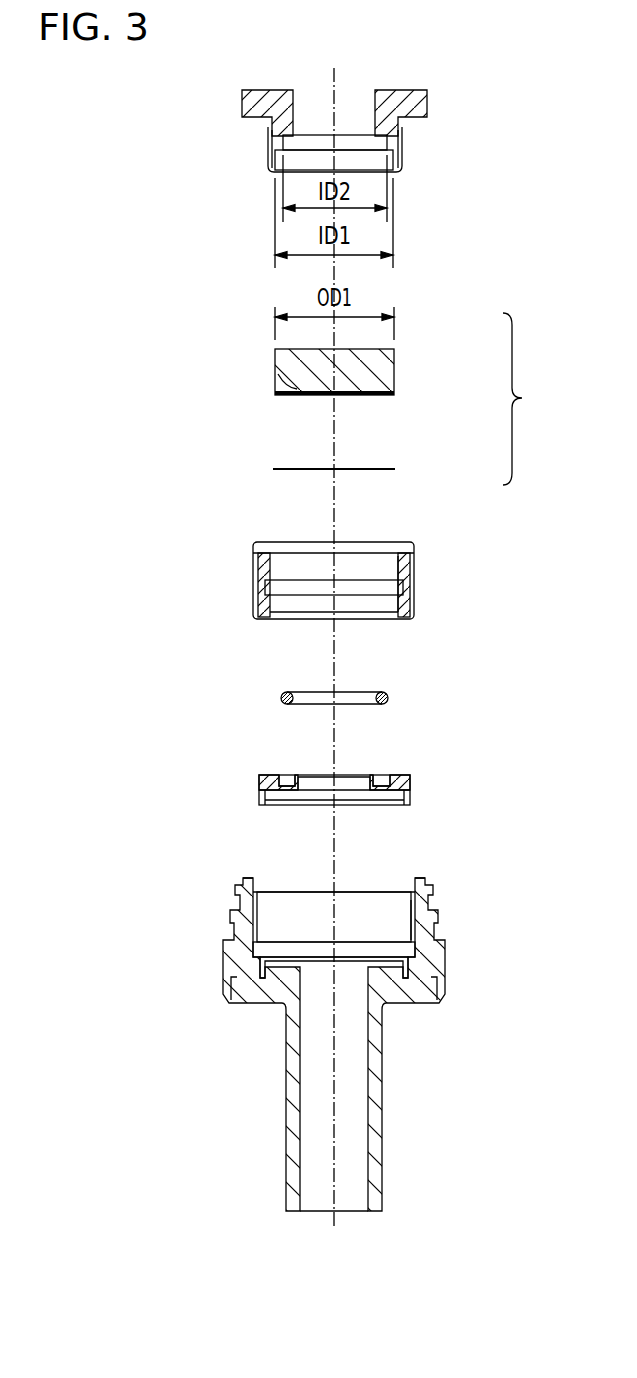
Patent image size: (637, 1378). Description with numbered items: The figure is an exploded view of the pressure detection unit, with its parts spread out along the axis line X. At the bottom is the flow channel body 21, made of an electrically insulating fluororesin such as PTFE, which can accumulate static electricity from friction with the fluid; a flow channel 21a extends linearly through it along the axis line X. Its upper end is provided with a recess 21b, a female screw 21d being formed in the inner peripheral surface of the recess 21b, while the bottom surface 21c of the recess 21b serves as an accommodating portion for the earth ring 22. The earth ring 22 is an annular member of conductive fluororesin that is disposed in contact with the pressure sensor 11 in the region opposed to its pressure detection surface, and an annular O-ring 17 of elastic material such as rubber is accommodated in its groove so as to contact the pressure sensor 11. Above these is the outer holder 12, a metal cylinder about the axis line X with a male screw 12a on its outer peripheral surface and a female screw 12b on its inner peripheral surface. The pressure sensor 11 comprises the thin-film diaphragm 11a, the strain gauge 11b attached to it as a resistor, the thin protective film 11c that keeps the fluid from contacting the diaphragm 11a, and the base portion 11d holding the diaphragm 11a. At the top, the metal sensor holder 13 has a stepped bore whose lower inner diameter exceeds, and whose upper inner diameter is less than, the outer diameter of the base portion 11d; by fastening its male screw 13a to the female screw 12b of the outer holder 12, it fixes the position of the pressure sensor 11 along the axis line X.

The pressure sensor 11 is at (386, 399).
The diaphragm 11a is at (370, 397).
The strain gauge 11b is at (290, 387).
The protective film 11c is at (395, 469).
The base portion 11d is at (394, 372).
The outer holder 12 is at (425, 582).
The male screw 12a is at (414, 553).
The female screw 12b is at (397, 568).
The sensor holder 13 is at (428, 110).
The male screw 13a is at (402, 150).
The O-ring 17 is at (388, 698).
The flow channel body 21 is at (441, 958).
The flow channel 21a is at (374, 1092).
The recess 21b is at (366, 899).
The bottom surface 21c is at (283, 965).
The female screw 21d is at (412, 905).
The earth ring 22 is at (410, 787).
The axis line X is at (336, 1170).